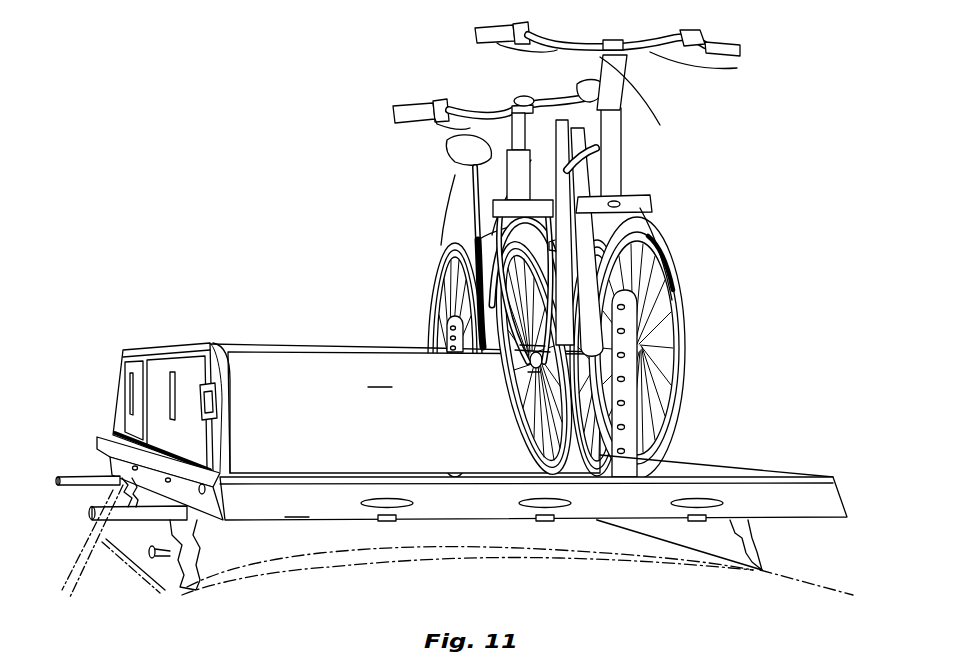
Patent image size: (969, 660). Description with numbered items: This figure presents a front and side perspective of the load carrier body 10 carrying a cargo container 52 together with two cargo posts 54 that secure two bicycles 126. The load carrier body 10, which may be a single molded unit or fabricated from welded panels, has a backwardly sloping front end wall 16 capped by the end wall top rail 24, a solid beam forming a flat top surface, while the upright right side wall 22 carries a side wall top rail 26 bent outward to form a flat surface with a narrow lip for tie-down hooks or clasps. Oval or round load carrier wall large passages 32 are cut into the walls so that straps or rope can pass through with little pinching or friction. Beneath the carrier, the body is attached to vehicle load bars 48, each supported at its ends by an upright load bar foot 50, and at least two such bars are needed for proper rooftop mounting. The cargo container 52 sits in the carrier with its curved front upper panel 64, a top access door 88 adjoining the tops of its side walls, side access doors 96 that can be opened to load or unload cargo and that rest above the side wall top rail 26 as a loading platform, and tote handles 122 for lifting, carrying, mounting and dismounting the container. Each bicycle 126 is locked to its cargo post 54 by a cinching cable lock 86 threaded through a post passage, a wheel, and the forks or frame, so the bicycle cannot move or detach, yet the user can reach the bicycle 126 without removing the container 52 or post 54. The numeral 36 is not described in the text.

The load carrier body 10 is at (583, 527).
The front end wall 16 is at (552, 489).
The right side wall 22 is at (112, 458).
The end wall top rail 24 is at (717, 482).
The side wall top rail 26 is at (128, 464).
The load carrier wall large passage 32 is at (527, 517).
The retaining tab 36 is at (387, 520).
The vehicle load bar 48 is at (90, 511).
The load bar foot 50 is at (148, 553).
The cargo container 52 is at (315, 324).
The cargo post 54 is at (437, 315).
The cargo container front upper panel 64 is at (321, 388).
The cinching cable lock 86 is at (455, 286).
The top access door 88 is at (133, 350).
The side access door 96 is at (128, 428).
The tote handle 122 is at (220, 405).
The bicycle 126 is at (395, 116).